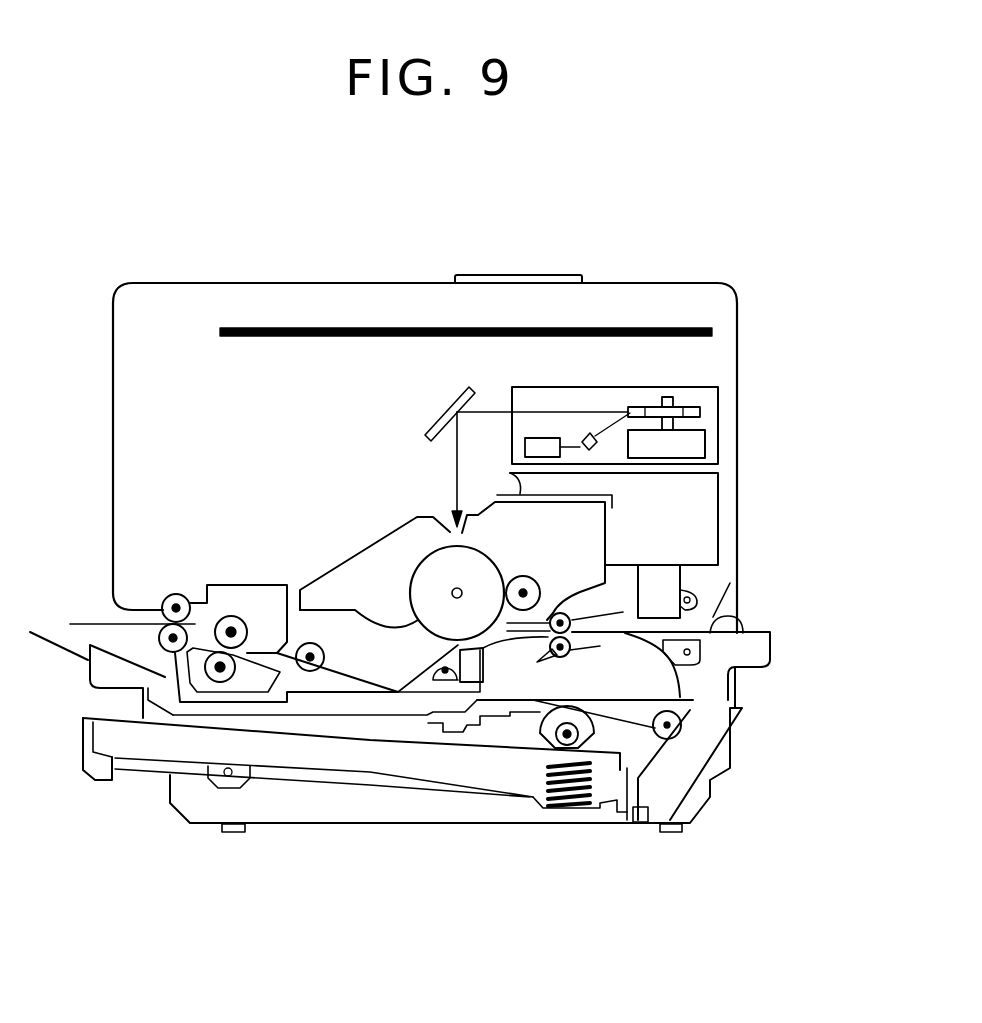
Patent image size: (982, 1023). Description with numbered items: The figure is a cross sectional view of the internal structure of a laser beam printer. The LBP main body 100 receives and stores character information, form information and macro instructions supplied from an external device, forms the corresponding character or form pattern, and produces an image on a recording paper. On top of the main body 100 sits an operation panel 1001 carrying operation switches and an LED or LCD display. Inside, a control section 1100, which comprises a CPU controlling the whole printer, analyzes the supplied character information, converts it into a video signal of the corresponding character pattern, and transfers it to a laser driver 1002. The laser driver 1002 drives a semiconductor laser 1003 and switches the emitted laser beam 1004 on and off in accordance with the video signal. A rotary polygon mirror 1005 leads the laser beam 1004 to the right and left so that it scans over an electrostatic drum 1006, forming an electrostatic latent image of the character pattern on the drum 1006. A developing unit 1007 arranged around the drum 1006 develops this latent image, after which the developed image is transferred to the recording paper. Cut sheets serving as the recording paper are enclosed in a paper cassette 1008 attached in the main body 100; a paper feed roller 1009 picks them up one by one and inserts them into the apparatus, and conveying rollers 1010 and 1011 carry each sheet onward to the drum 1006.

The LBP main body 100 is at (653, 283).
The operation panel 1001 is at (510, 274).
The control section 1100 is at (712, 327).
The laser beam 1004 is at (565, 411).
The rotary polygon mirror 1005 is at (700, 412).
The laser driver 1002 is at (525, 447).
The semiconductor laser 1003 is at (590, 451).
The electrostatic drum 1006 is at (437, 555).
The developing unit 1007 is at (353, 565).
The conveying roller 1011 is at (557, 658).
The conveying roller 1010 is at (683, 724).
The paper cassette 1008 is at (83, 775).
The paper feed roller 1009 is at (553, 740).